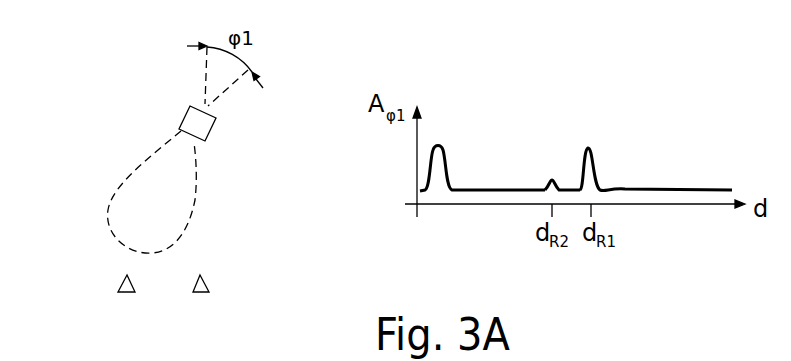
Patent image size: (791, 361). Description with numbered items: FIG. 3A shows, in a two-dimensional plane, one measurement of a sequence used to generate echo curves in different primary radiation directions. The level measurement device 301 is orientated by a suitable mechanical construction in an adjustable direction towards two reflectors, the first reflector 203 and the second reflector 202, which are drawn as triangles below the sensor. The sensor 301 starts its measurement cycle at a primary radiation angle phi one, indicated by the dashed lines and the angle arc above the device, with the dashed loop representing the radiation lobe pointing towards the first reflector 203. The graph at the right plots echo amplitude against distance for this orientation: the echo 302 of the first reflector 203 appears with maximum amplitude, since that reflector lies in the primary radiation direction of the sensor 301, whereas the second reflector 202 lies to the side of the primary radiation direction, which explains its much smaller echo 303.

The level measurement device 301 is at (211, 127).
The echo of reflector R1 302 is at (586, 145).
The echo of reflector R2 303 is at (550, 179).
The reflector R2 202 is at (210, 283).
The reflector R1 203 is at (120, 282).